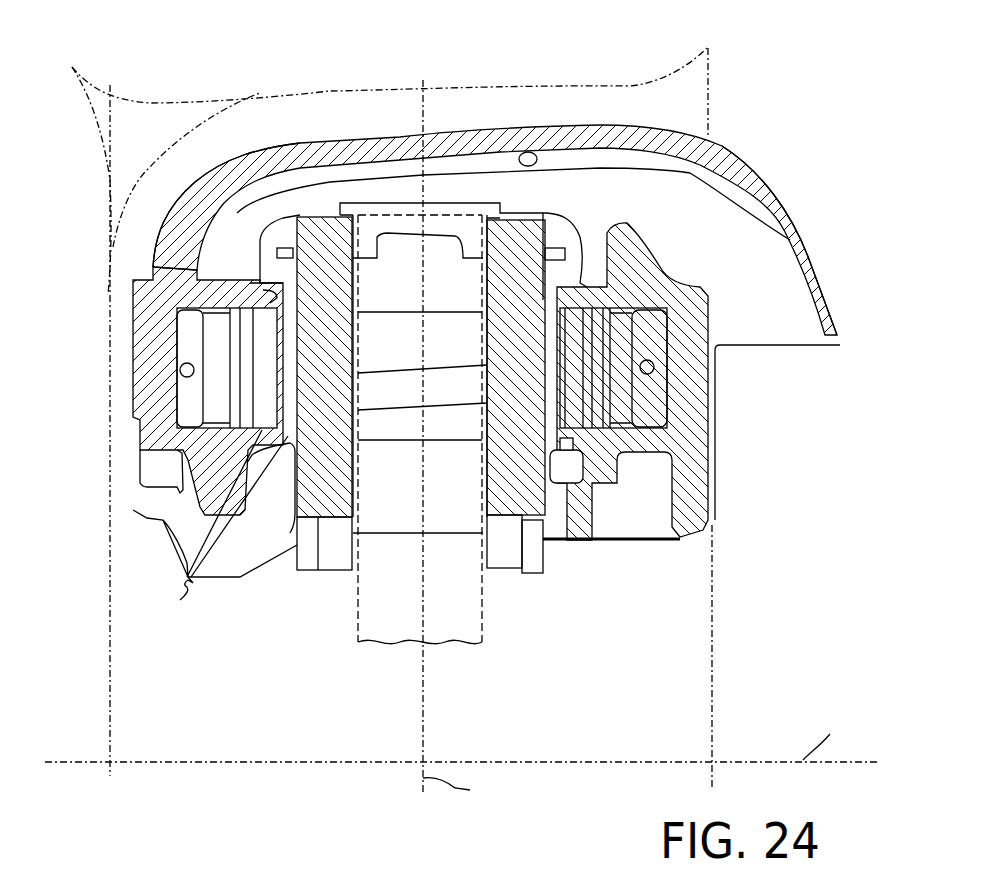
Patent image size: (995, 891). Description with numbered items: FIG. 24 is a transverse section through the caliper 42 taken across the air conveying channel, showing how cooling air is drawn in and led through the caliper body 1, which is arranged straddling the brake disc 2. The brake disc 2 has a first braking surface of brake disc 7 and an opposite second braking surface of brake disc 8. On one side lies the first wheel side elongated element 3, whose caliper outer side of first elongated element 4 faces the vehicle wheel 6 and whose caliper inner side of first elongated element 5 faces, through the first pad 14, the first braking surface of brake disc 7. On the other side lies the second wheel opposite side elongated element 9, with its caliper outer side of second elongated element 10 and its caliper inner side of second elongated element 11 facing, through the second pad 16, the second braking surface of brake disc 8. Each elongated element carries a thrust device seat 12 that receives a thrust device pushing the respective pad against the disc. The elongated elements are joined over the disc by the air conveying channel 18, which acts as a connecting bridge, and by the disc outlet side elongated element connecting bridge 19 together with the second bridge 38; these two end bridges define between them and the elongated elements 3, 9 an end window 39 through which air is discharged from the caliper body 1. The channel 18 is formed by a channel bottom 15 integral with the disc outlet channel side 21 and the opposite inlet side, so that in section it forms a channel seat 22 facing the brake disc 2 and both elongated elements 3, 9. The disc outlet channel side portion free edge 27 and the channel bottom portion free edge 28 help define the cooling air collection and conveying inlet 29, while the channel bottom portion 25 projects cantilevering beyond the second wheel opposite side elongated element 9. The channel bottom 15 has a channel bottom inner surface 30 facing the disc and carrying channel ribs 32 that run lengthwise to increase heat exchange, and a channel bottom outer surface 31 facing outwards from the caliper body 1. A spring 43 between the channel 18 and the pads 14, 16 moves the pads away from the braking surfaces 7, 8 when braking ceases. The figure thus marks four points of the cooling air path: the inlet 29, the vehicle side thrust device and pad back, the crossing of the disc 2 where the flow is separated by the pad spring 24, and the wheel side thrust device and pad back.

The caliper body 1 is at (714, 104).
The brake disc 2 is at (395, 602).
The first wheel side elongated element 3 is at (160, 490).
The caliper outer side of first elongated element 4 is at (133, 388).
The caliper inner side of first elongated element 5 is at (398, 379).
The vehicle wheel 6 is at (103, 190).
The first braking surface of brake disc 7 is at (360, 583).
The second braking surface of brake disc 8 is at (483, 580).
The second wheel opposite side elongated element 9 is at (657, 485).
The caliper outer side of second elongated element 10 is at (707, 453).
The caliper inner side of second elongated element 11 is at (587, 483).
The thrust device seat 12 is at (215, 328).
The first pad 14 is at (312, 542).
The channel bottom 15 is at (470, 133).
The second pad 16 is at (547, 470).
The air conveying channel 18 is at (403, 133).
The disc outlet side elongated element connecting bridge 19 is at (453, 513).
The disc outlet channel side 21 is at (540, 193).
The channel seat 22 is at (720, 148).
The sealing lip 24 is at (760, 330).
The channel bottom portion 25 is at (810, 320).
The disc outlet channel side portion free edge 27 is at (730, 350).
The channel bottom portion free edge 28 is at (827, 347).
The cooling air collection and conveying inlet 29 is at (785, 316).
The channel bottom inner surface 30 is at (523, 167).
The channel bottom outer surface 31 is at (345, 135).
The channel ribs 32 is at (618, 189).
The second disc outlet side elongated element connecting bridge 38 is at (460, 340).
The end window 39 is at (165, 608).
The caliper 42 is at (175, 186).
The spring 43 is at (460, 223).